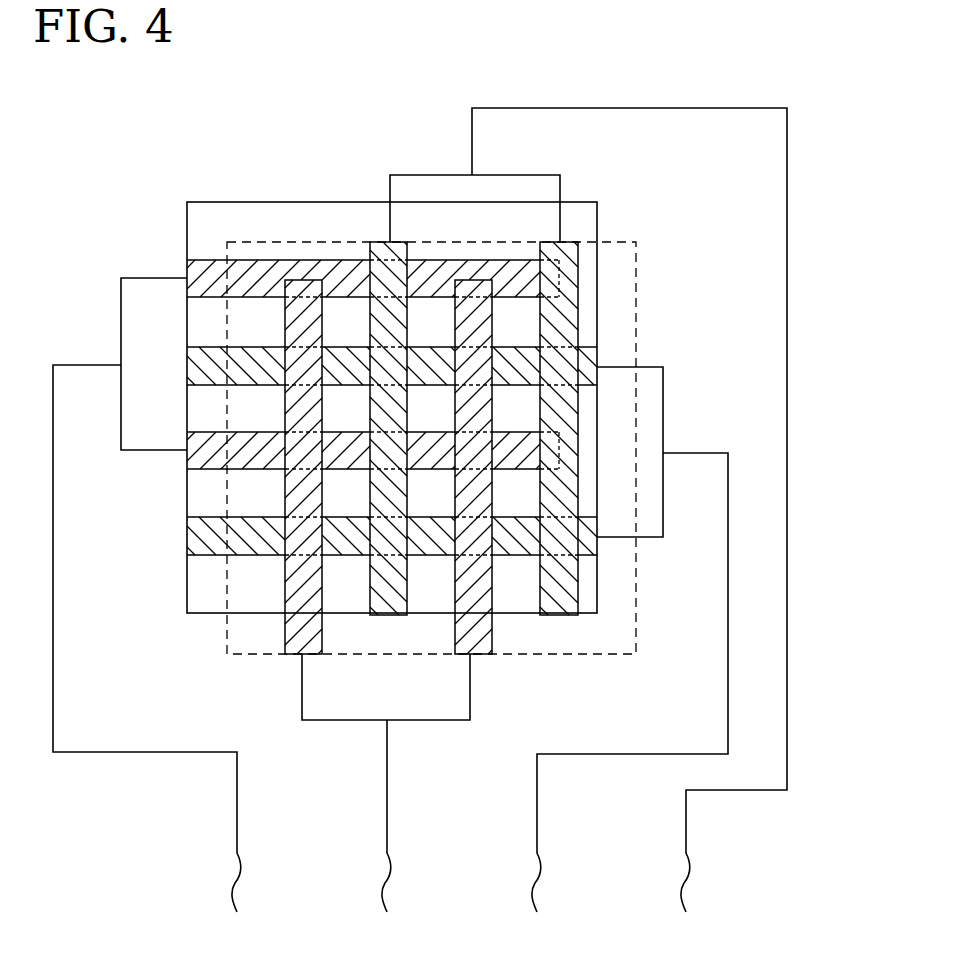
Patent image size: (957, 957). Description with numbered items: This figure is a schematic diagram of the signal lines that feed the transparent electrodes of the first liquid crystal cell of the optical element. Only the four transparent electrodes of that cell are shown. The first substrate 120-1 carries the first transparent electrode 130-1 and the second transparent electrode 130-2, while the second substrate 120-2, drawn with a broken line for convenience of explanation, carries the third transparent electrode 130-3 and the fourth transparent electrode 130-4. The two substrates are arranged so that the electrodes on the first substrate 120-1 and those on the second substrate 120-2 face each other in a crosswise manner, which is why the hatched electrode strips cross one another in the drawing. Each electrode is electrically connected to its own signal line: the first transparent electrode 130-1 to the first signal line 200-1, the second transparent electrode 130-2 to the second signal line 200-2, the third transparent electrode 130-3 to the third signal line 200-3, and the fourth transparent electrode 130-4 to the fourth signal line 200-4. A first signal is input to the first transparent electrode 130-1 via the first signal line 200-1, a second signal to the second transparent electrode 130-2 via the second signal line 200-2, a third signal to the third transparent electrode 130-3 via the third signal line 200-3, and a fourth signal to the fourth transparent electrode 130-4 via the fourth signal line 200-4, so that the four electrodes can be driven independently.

The first substrate 120-1 is at (599, 220).
The second substrate 120-2 is at (637, 258).
The first transparent electrode 130-1 is at (262, 282).
The second transparent electrode 130-2 is at (192, 533).
The third transparent electrode 130-3 is at (288, 597).
The fourth transparent electrode 130-4 is at (558, 325).
The first signal line 200-1 is at (159, 606).
The second signal line 200-2 is at (386, 794).
The third signal line 200-3 is at (617, 652).
The fourth signal line 200-4 is at (588, 522).